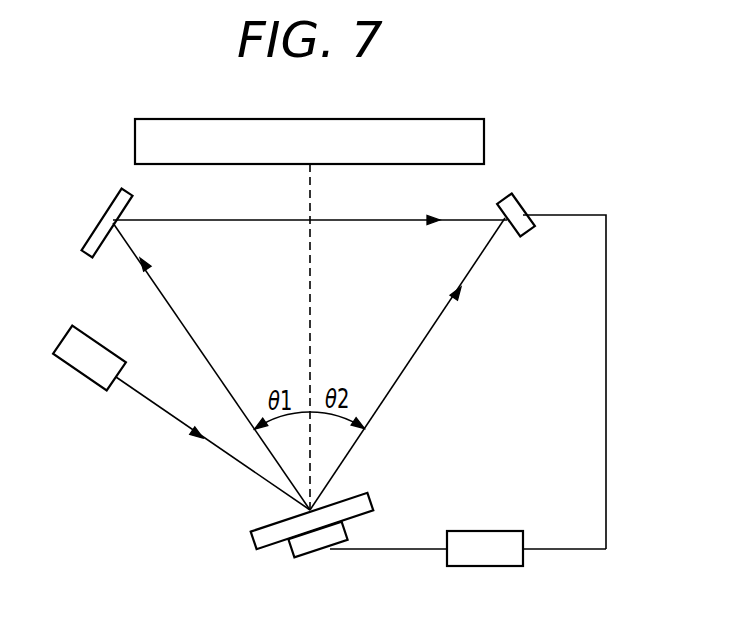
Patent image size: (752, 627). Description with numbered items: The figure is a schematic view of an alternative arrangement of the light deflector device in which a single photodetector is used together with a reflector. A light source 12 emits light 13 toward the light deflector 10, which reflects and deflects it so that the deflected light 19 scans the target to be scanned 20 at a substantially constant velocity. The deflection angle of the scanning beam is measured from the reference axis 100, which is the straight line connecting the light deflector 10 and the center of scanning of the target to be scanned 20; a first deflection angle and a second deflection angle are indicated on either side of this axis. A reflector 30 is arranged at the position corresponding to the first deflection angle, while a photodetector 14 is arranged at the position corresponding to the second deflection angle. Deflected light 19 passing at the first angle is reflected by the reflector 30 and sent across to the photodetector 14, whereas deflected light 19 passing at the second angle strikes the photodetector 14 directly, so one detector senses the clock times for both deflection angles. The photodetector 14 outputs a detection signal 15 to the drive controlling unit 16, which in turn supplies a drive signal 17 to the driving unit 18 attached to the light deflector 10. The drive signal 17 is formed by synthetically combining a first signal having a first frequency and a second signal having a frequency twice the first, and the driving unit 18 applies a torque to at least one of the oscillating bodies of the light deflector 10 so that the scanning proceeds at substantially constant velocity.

The light deflector 10 is at (286, 527).
The light source 12 is at (76, 339).
The light 13 is at (211, 443).
The photodetector 14 is at (520, 184).
The detection signal 15 is at (593, 382).
The drive controlling unit 16 is at (485, 517).
The drive signal 17 is at (468, 577).
The driving unit 18 is at (293, 556).
The deflected light 19 is at (310, 363).
The target to be scanned 20 is at (309, 111).
The reflector 30 is at (96, 215).
The reference axis 100 is at (343, 337).